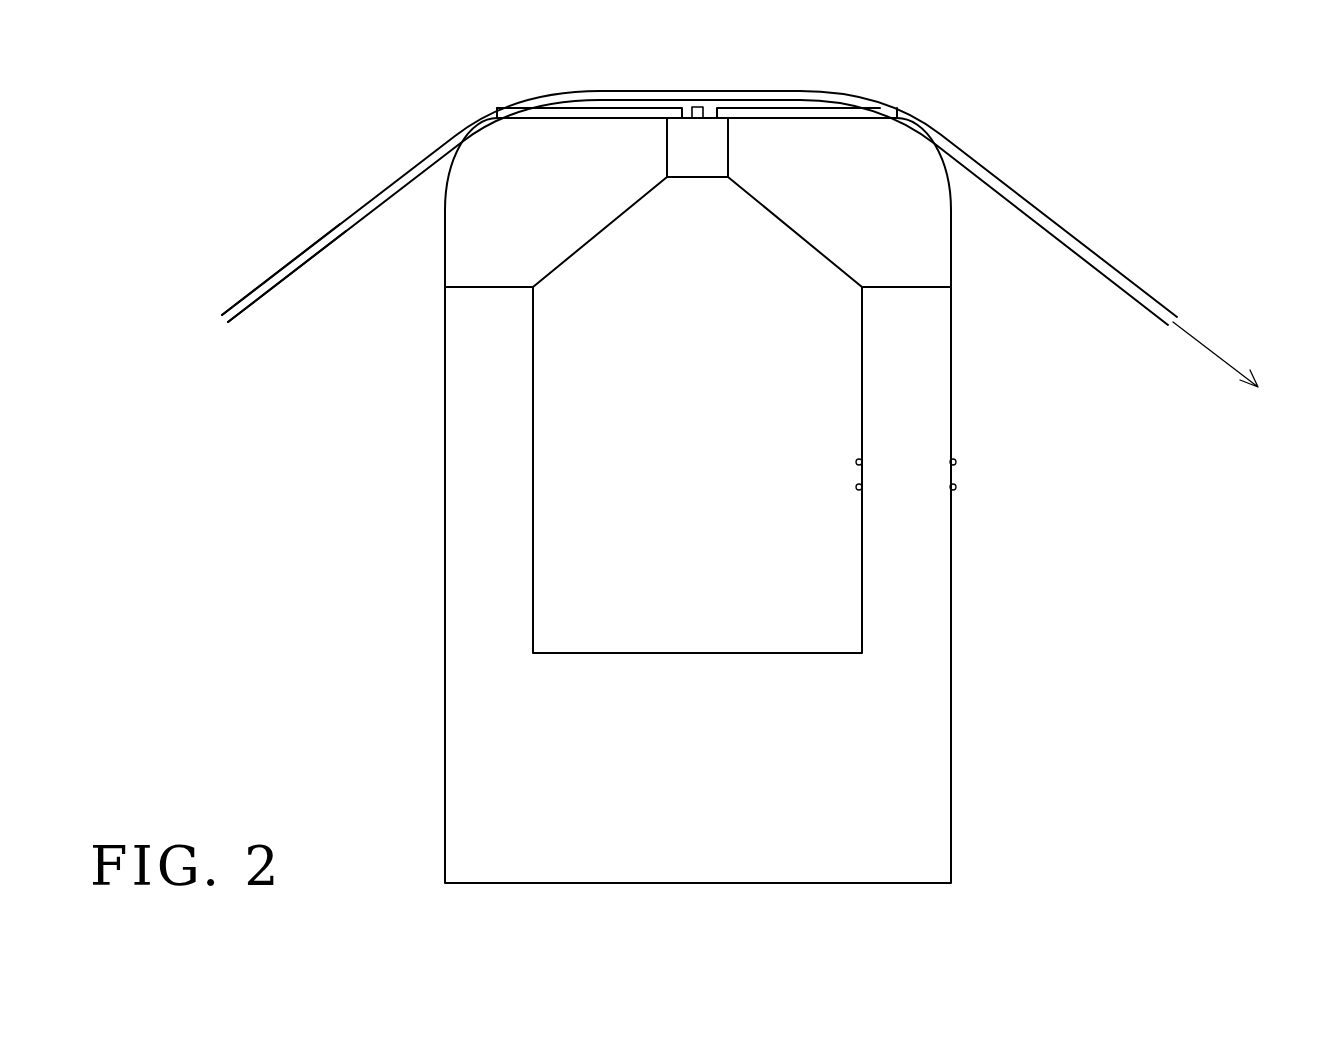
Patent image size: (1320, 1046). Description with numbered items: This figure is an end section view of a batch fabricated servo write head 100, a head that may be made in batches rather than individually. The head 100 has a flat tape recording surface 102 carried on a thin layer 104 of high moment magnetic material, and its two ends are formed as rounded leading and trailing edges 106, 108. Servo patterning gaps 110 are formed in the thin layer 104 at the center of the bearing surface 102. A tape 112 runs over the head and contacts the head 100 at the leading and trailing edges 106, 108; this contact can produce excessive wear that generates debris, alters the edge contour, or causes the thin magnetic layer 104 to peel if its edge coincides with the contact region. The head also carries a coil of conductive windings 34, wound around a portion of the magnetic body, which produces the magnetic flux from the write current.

The batch fabricated servo write head 100 is at (978, 623).
The flat tape recording surface 102 is at (816, 63).
The thin layer of high moment magnetic material 104 is at (600, 111).
The rounded leading edge 106 is at (488, 123).
The rounded trailing edge 108 is at (908, 125).
The servo patterning gaps 110 is at (711, 112).
The tape 112 is at (382, 198).
The coil of conductive windings 34 is at (956, 462).